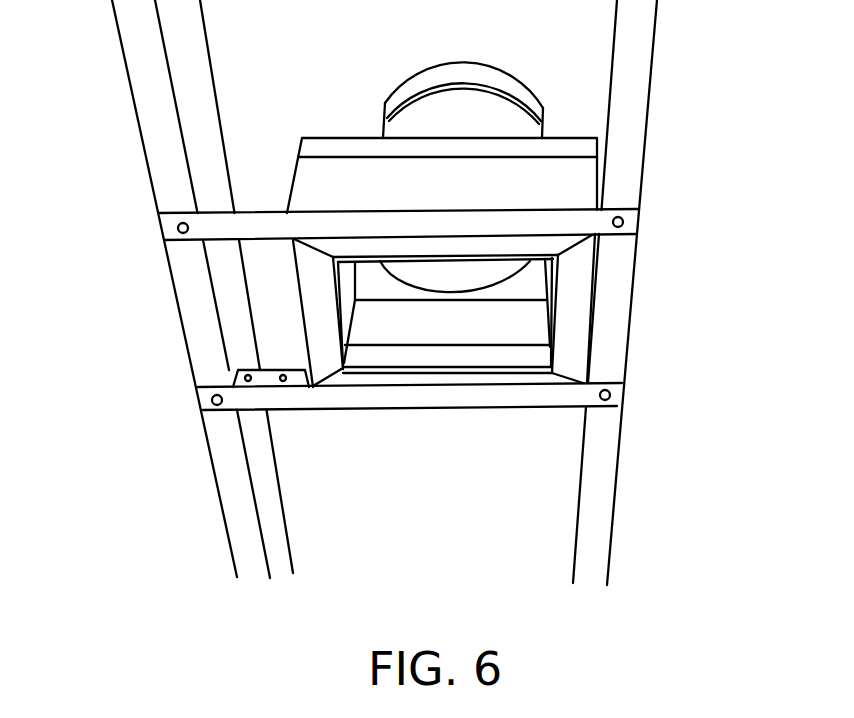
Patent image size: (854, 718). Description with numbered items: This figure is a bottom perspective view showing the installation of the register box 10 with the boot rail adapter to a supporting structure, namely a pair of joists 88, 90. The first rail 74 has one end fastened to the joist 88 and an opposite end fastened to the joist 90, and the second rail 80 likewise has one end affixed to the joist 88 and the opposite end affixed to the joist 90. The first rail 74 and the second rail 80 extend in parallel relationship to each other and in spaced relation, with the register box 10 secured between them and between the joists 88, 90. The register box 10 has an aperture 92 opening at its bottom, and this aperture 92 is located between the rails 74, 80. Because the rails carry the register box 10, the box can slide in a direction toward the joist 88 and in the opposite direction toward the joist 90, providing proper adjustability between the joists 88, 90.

The register box 10 is at (315, 151).
The first rail 74 is at (257, 210).
The second rail 80 is at (342, 400).
The joist 88 is at (636, 97).
The joist 90 is at (147, 116).
The aperture 92 is at (487, 330).